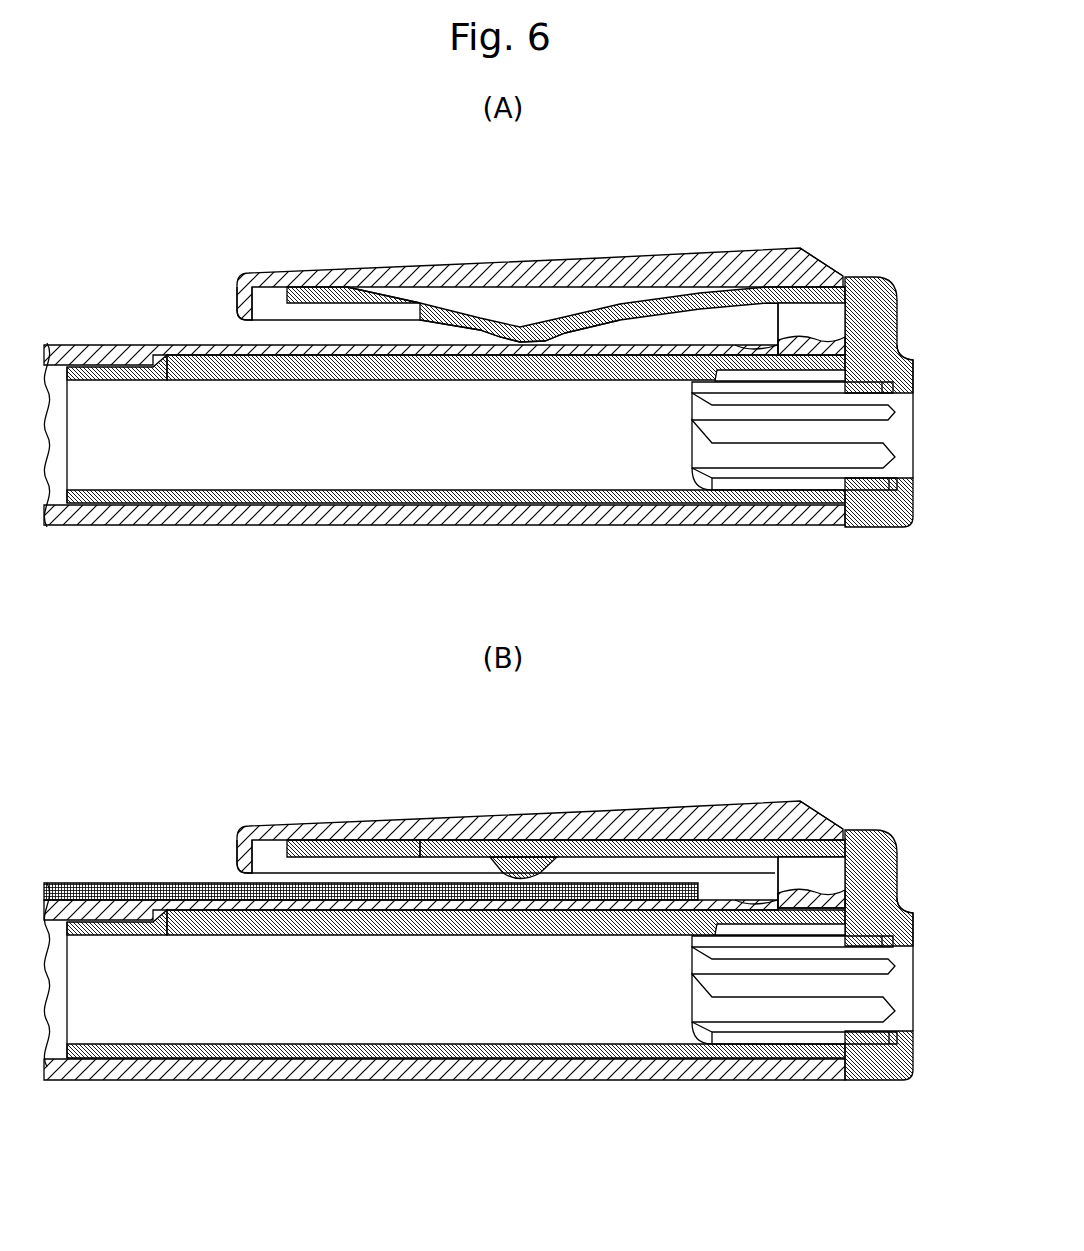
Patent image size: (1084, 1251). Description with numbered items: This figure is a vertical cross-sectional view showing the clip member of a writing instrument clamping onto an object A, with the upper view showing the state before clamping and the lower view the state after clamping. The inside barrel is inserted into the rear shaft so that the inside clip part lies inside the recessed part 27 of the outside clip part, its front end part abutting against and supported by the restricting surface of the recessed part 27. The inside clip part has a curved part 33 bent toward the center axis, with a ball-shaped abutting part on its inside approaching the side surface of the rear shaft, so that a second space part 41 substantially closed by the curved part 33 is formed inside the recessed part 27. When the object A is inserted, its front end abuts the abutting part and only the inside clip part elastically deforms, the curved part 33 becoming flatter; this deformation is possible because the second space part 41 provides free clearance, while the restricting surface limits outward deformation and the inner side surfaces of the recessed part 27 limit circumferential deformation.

The recessed part 27 is at (267, 304).
The curved part 33 is at (518, 302).
The second space part 41 is at (588, 320).
The object A is at (371, 845).